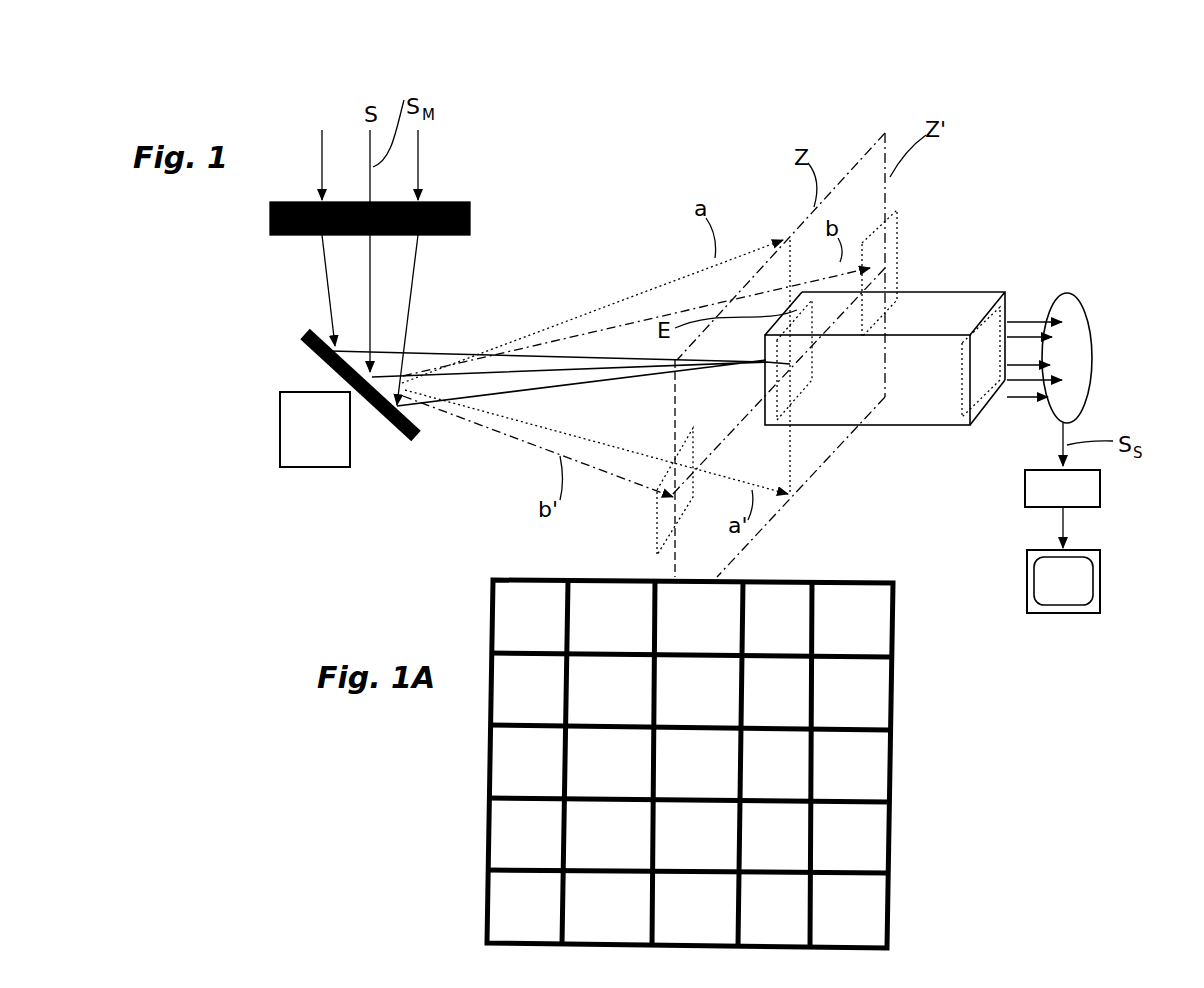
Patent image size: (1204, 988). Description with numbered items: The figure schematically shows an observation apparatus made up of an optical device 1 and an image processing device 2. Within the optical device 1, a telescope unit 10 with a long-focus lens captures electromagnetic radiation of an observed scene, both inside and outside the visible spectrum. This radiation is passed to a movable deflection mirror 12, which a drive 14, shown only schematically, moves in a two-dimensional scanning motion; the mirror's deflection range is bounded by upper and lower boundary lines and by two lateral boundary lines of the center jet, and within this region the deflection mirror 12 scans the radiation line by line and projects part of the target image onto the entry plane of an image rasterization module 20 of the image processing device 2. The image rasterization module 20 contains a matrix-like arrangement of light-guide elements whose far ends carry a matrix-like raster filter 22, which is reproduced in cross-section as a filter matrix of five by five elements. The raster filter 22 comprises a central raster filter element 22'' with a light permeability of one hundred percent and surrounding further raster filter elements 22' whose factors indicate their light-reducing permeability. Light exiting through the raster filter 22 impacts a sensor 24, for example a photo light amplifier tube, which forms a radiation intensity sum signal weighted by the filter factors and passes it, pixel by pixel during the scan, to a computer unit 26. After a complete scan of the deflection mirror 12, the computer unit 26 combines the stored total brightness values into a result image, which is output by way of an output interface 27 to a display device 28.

In FIG. 1, the optical device 1 is at (312, 478).
In FIG. 1, the image processing device 2 is at (885, 322).
In FIG. 1, the telescope unit 10 is at (262, 245).
In FIG. 1, the deflection mirror 12 is at (313, 333).
In FIG. 1, the drive 14 is at (297, 424).
In FIG. 1, the image rasterization module 20 is at (907, 428).
In FIG. 1, the raster filter 22 is at (975, 329).
In FIG. 1A, the raster filter 22 is at (757, 764).
In FIG. 1A, the further raster filter elements 22' is at (792, 606).
In FIG. 1A, the central raster filter element 22'' is at (836, 812).
In FIG. 1, the sensor 24 is at (1092, 350).
In FIG. 1, the computer unit 26 is at (1100, 487).
In FIG. 1, the output interface 27 is at (1067, 530).
In FIG. 1, the display device 28 is at (1100, 580).